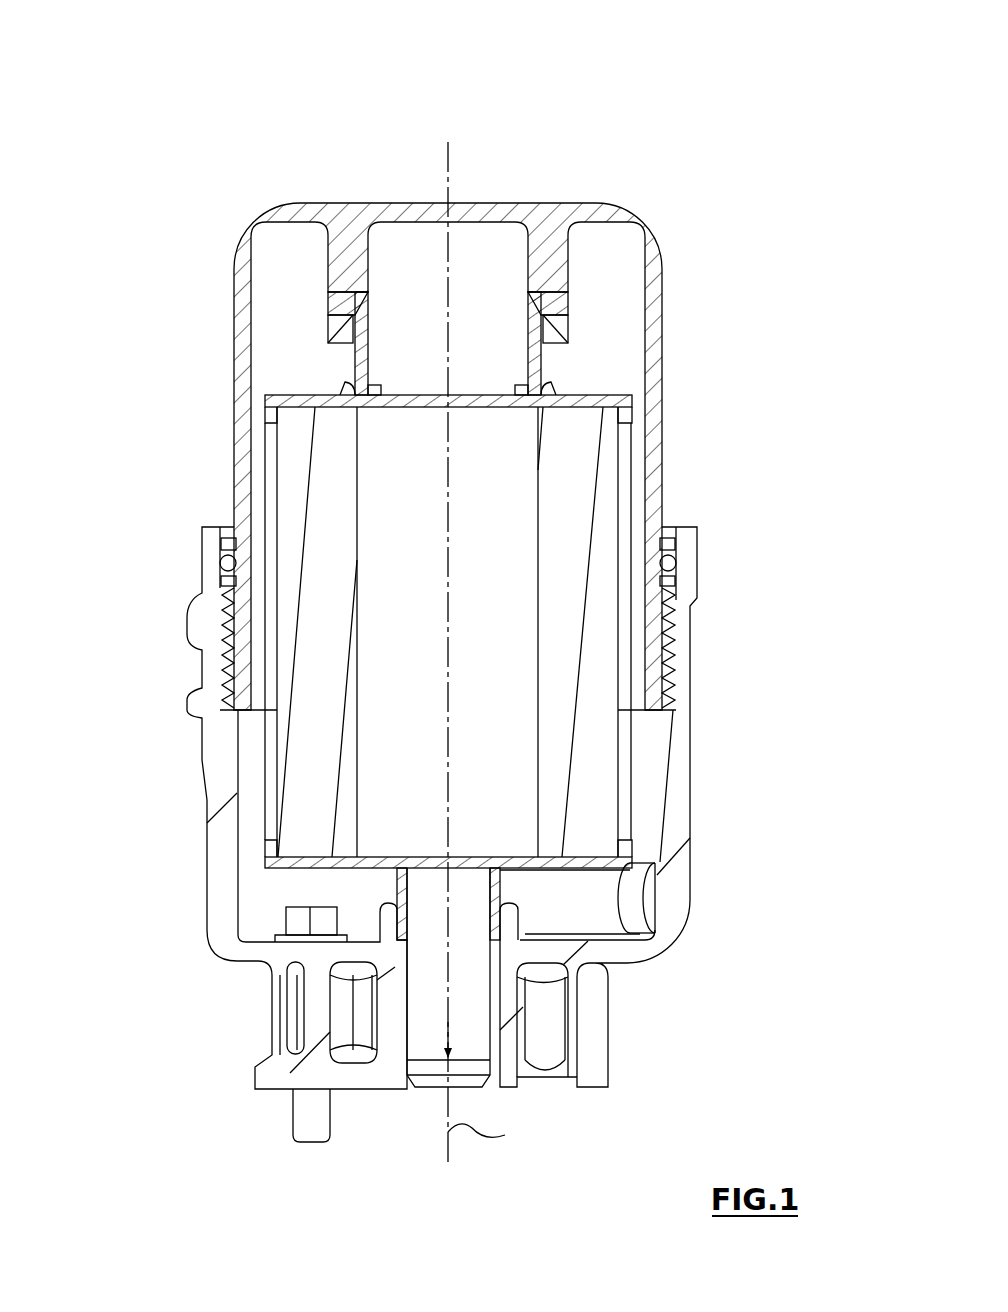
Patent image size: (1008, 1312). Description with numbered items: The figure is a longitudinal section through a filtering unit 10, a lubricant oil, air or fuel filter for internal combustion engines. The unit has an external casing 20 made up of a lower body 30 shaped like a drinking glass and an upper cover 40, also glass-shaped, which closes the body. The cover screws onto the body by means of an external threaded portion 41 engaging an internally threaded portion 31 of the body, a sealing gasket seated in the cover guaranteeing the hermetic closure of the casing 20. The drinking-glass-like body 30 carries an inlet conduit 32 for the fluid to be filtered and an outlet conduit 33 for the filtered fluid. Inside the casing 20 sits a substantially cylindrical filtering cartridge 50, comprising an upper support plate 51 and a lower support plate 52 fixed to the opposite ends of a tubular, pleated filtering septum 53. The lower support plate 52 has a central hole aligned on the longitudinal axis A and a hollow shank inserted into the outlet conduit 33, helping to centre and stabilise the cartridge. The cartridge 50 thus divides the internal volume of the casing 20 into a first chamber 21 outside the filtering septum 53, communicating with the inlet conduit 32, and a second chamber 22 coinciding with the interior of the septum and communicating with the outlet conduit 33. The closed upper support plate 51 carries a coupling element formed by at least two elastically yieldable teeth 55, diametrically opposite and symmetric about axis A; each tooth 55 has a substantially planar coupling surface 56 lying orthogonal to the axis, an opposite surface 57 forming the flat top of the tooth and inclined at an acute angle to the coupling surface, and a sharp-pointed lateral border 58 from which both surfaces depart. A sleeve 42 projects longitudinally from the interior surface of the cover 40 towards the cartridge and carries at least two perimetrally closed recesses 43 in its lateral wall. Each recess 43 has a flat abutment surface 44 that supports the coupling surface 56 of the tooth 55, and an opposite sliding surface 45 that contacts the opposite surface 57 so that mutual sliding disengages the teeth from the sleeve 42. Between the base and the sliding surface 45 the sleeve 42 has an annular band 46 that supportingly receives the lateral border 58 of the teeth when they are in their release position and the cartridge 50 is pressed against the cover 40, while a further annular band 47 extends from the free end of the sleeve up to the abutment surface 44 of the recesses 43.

The filtering unit 10 is at (165, 127).
The external casing 20 is at (718, 726).
The first chamber 21 is at (560, 926).
The second chamber 22 is at (433, 638).
The lower body 30 is at (597, 958).
The internally threaded portion 31 is at (673, 615).
The inlet conduit 32 is at (617, 900).
The outlet conduit 33 is at (430, 1035).
The upper cover 40 is at (607, 218).
The external threaded portion 41 is at (203, 673).
The sleeve 42 is at (350, 250).
The recess 43 is at (330, 303).
The abutment surface 44 is at (328, 313).
The sliding surface 45 is at (513, 290).
The annular band 46 is at (527, 254).
The further annular band 47 is at (543, 358).
The filtering cartridge 50 is at (247, 912).
The upper support plate 51 is at (603, 407).
The lower support plate 52 is at (262, 873).
The filtering septum 53 is at (309, 660).
The tooth 55 is at (530, 330).
The coupling surface 56 is at (350, 315).
The opposite surface 57 is at (330, 303).
The lateral border 58 is at (328, 327).